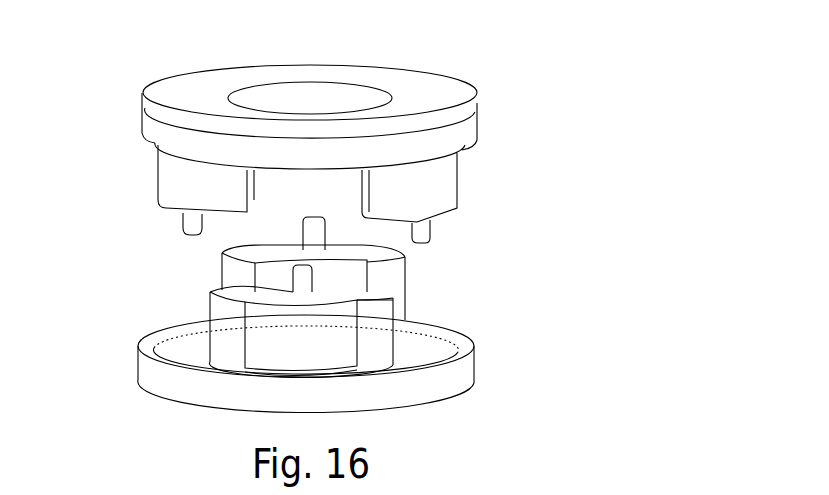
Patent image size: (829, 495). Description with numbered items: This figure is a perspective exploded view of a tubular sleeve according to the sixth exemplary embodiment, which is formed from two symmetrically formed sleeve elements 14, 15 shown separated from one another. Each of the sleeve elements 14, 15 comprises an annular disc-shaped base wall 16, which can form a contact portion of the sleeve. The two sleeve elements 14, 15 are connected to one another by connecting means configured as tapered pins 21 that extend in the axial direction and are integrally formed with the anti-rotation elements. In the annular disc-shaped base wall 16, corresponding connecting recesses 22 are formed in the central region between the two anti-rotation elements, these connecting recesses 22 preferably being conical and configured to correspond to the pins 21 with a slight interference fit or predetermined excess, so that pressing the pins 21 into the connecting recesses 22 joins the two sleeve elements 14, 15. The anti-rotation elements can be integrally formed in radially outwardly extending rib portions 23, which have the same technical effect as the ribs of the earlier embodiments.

The sleeve element 14 is at (462, 118).
The sleeve element 15 is at (442, 373).
The annular disc-shaped base wall 16 is at (410, 393).
The tapered pin 21 is at (418, 228).
The connecting recess 22 is at (322, 70).
The rib portion 23 is at (301, 331).